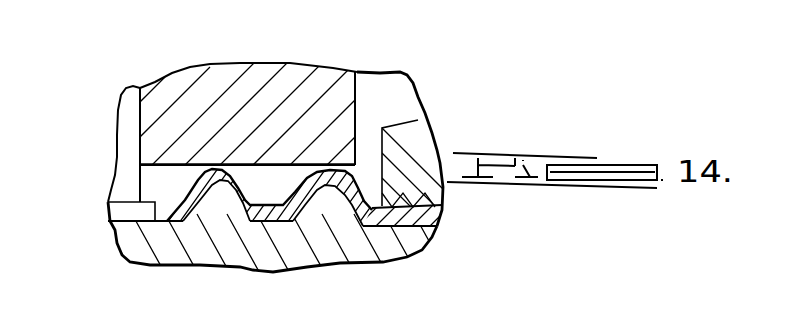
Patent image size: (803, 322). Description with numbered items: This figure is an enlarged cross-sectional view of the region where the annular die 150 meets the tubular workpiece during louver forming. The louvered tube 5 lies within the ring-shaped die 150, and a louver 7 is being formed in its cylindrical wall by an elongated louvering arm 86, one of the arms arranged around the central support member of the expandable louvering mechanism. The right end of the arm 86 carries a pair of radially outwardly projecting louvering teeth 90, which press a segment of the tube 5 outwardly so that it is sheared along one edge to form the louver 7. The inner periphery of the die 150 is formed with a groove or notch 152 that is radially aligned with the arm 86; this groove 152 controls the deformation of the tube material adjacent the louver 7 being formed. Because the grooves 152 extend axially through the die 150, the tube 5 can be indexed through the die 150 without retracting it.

The louvered tube 5 is at (158, 199).
The louver 7 is at (190, 175).
The louvering arm 86 is at (182, 258).
The louvering tooth 90 is at (210, 203).
The die 150 is at (348, 97).
The groove or notch 152 is at (249, 166).